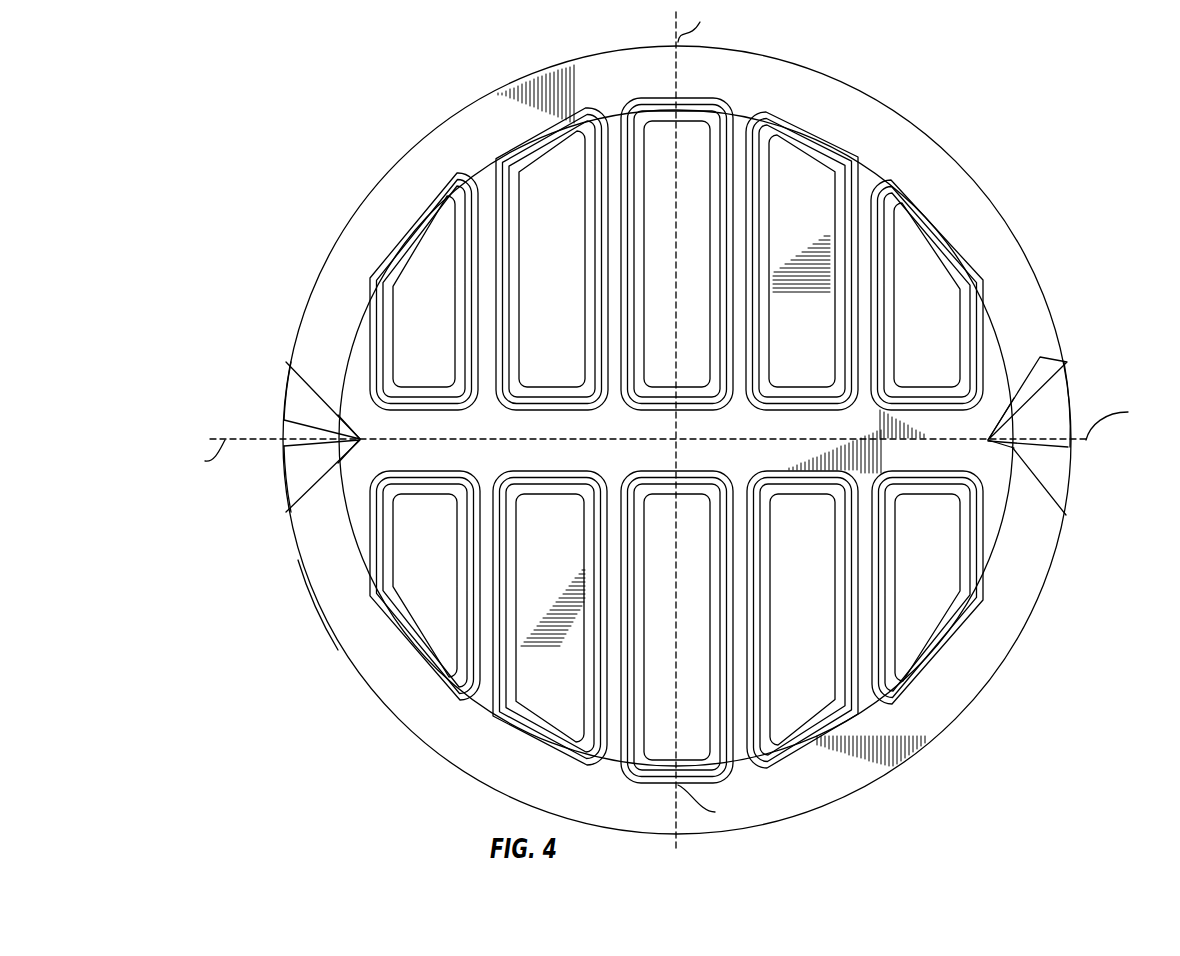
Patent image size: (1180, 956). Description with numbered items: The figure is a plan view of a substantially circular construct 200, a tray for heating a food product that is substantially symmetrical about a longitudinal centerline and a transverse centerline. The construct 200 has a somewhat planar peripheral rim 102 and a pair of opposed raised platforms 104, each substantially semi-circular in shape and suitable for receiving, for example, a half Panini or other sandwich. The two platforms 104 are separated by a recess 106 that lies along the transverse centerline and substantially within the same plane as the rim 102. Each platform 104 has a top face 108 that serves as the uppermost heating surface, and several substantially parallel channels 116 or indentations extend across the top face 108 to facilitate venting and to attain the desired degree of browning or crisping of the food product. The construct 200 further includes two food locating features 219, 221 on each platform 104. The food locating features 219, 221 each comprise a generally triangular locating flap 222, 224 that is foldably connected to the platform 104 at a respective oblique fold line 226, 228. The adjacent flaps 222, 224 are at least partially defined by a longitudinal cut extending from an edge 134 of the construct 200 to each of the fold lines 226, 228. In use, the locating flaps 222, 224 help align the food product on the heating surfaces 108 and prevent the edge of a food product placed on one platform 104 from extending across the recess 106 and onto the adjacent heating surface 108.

The peripheral rim 102 is at (1007, 252).
The platform 104 is at (925, 266).
The recess 106 is at (697, 452).
The top face 108 is at (697, 286).
The channel 116 is at (615, 141).
The edge 134 is at (318, 609).
The construct 200 is at (915, 155).
The food locating feature 219 is at (318, 386).
The food locating feature 221 is at (1046, 355).
The locating flap 222 is at (288, 388).
The locating flap 224 is at (1040, 385).
The oblique fold line 226 is at (338, 396).
The oblique fold line 228 is at (1032, 398).